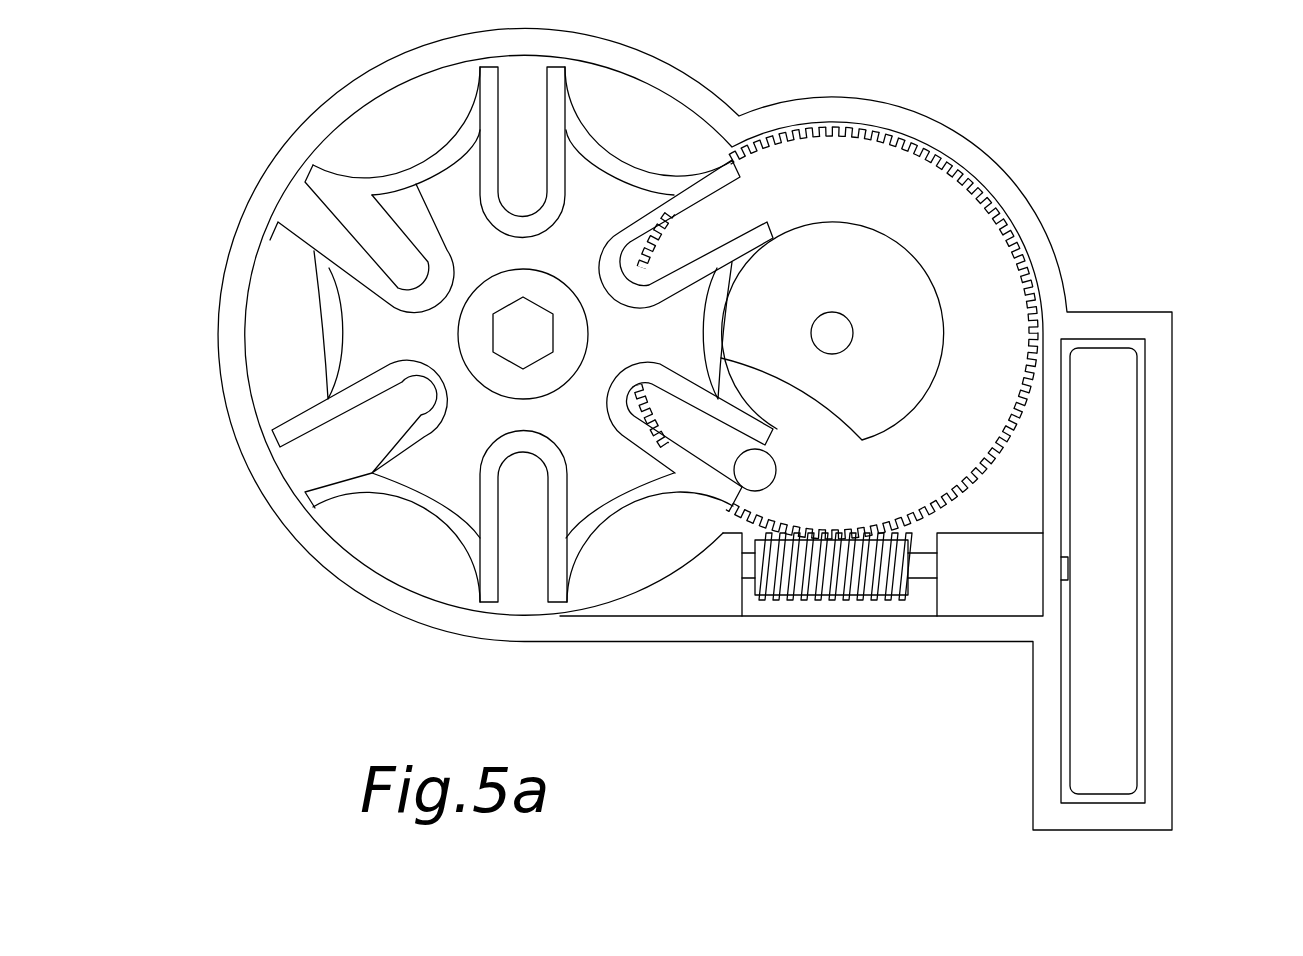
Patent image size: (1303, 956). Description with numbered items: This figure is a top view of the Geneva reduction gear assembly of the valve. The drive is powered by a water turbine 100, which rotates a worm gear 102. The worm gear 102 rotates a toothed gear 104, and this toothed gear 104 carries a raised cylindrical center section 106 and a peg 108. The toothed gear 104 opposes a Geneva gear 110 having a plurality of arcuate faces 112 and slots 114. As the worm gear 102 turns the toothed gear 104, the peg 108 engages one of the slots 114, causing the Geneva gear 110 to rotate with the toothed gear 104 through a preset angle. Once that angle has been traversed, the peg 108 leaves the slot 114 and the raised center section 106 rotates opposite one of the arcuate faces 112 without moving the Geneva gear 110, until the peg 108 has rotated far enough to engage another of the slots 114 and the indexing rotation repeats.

The water turbine 100 is at (710, 429).
The worm gear 102 is at (852, 600).
The toothed gear 104 is at (988, 272).
The raised cylindrical center section 106 is at (840, 290).
The peg 108 is at (772, 470).
The Geneva gear 110 is at (479, 328).
The arcuate faces 112 is at (447, 250).
The slots 114 is at (330, 216).